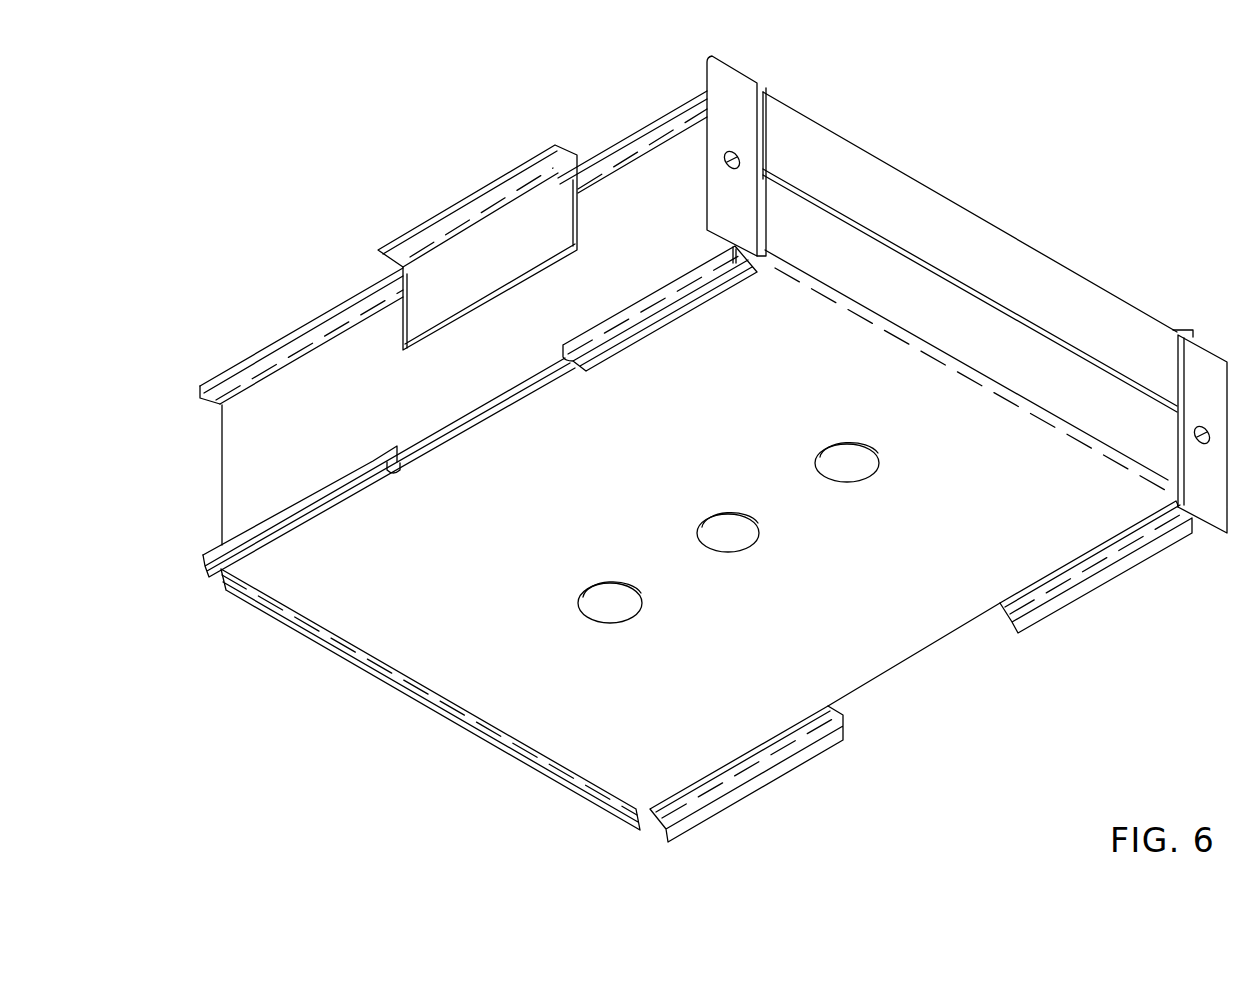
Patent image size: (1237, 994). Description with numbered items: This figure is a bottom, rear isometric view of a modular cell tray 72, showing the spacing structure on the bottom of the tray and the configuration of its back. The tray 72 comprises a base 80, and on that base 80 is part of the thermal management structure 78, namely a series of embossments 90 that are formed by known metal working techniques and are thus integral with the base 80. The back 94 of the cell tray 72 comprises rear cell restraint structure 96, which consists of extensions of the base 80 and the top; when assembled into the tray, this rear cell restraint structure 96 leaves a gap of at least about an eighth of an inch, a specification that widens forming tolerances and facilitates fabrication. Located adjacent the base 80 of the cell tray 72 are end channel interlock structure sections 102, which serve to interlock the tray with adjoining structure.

The modular cell tray 72 is at (414, 183).
The thermal management structure 78 is at (800, 203).
The base 80 is at (1027, 498).
The embossments 90 is at (843, 472).
The back 94 is at (1020, 199).
The rear cell restraint structure 96 is at (880, 270).
The end channel interlock structure sections 102 is at (637, 310).